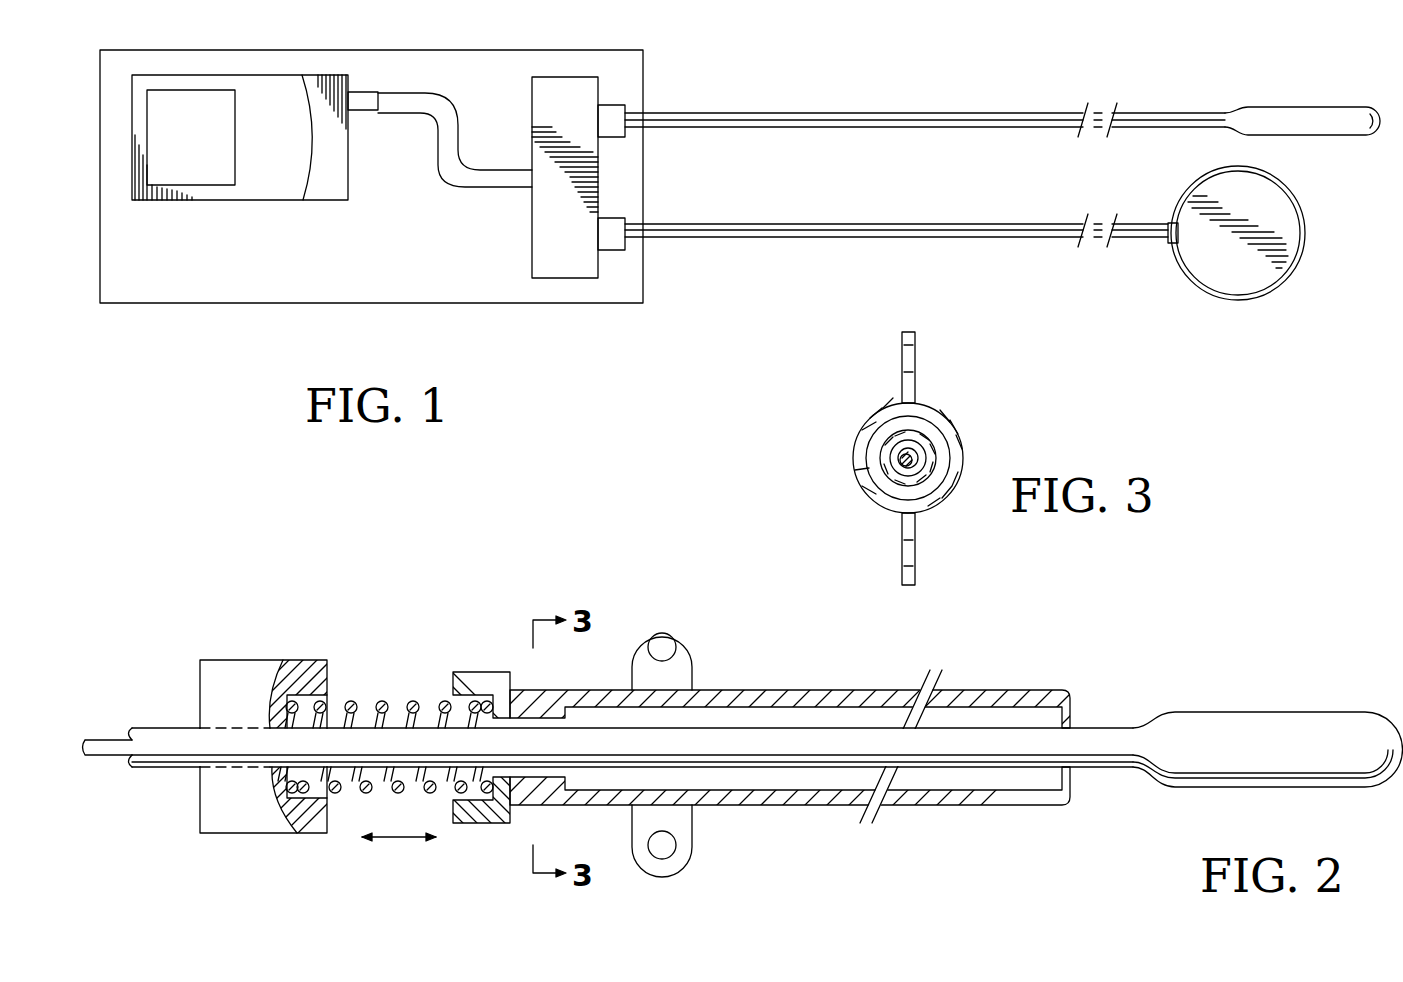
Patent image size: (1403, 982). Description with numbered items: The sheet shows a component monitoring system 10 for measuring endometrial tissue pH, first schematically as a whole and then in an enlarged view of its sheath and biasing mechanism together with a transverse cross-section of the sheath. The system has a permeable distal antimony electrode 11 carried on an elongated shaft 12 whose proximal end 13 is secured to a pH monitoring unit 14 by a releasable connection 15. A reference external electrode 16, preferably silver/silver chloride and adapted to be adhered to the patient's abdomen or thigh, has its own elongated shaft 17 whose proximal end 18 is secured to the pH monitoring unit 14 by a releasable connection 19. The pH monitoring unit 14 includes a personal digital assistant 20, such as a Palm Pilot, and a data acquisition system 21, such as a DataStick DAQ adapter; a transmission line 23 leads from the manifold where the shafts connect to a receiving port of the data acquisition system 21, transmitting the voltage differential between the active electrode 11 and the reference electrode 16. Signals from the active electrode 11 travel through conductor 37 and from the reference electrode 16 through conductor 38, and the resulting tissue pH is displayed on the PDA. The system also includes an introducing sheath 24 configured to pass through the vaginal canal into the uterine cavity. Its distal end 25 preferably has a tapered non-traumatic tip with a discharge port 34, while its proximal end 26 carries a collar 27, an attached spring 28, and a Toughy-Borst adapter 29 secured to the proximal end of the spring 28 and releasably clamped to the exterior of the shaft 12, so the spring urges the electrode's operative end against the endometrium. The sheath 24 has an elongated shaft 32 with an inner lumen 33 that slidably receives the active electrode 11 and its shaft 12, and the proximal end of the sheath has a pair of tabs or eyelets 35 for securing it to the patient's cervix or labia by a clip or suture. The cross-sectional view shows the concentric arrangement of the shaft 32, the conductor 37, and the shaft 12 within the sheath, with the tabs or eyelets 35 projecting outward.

In FIG. 1, the component monitoring system 10 is at (688, 335).
In FIG. 1, the permeable distal antimony electrode 11 is at (1300, 108).
In FIG. 2, the permeable distal antimony electrode 11 is at (1292, 712).
In FIG. 1, the elongated shaft 12 is at (915, 112).
In FIG. 3, the elongated shaft 12 is at (925, 450).
In FIG. 2, the elongated shaft 12 is at (1095, 728).
In FIG. 1, the proximal end 13 is at (645, 130).
In FIG. 1, the pH monitoring unit 14 is at (235, 304).
In FIG. 1, the releasable connection 15 is at (633, 106).
In FIG. 1, the reference external electrode 16 is at (1303, 218).
In FIG. 1, the elongated shaft 17 is at (912, 224).
In FIG. 1, the proximal end 18 is at (633, 218).
In FIG. 1, the releasable connection 19 is at (645, 245).
In FIG. 1, the personal digital assistant 20 is at (258, 187).
In FIG. 1, the data acquisition system 21 is at (328, 188).
In FIG. 1, the transmission line 23 is at (478, 189).
In FIG. 2, the introducing sheath 24 is at (736, 734).
In FIG. 2, the distal end 25 is at (1065, 690).
In FIG. 2, the proximal end 26 is at (530, 690).
In FIG. 3, the collar 27 is at (870, 458).
In FIG. 2, the collar 27 is at (481, 824).
In FIG. 2, the spring 28 is at (410, 700).
In FIG. 2, the Toughy-Borst adapter 29 is at (232, 660).
In FIG. 3, the elongated shaft 32 is at (878, 415).
In FIG. 2, the elongated shaft 32 is at (770, 806).
In FIG. 2, the inner lumen 33 is at (922, 788).
In FIG. 2, the discharge port 34 is at (1072, 792).
In FIG. 3, the tabs or eyelets 35 is at (915, 365).
In FIG. 2, the tabs or eyelets 35 is at (692, 661).
In FIG. 1, the conductor 37 is at (1100, 128).
In FIG. 3, the conductor 37 is at (880, 500).
In FIG. 2, the conductor 37 is at (115, 738).
In FIG. 1, the conductor 38 is at (1100, 242).